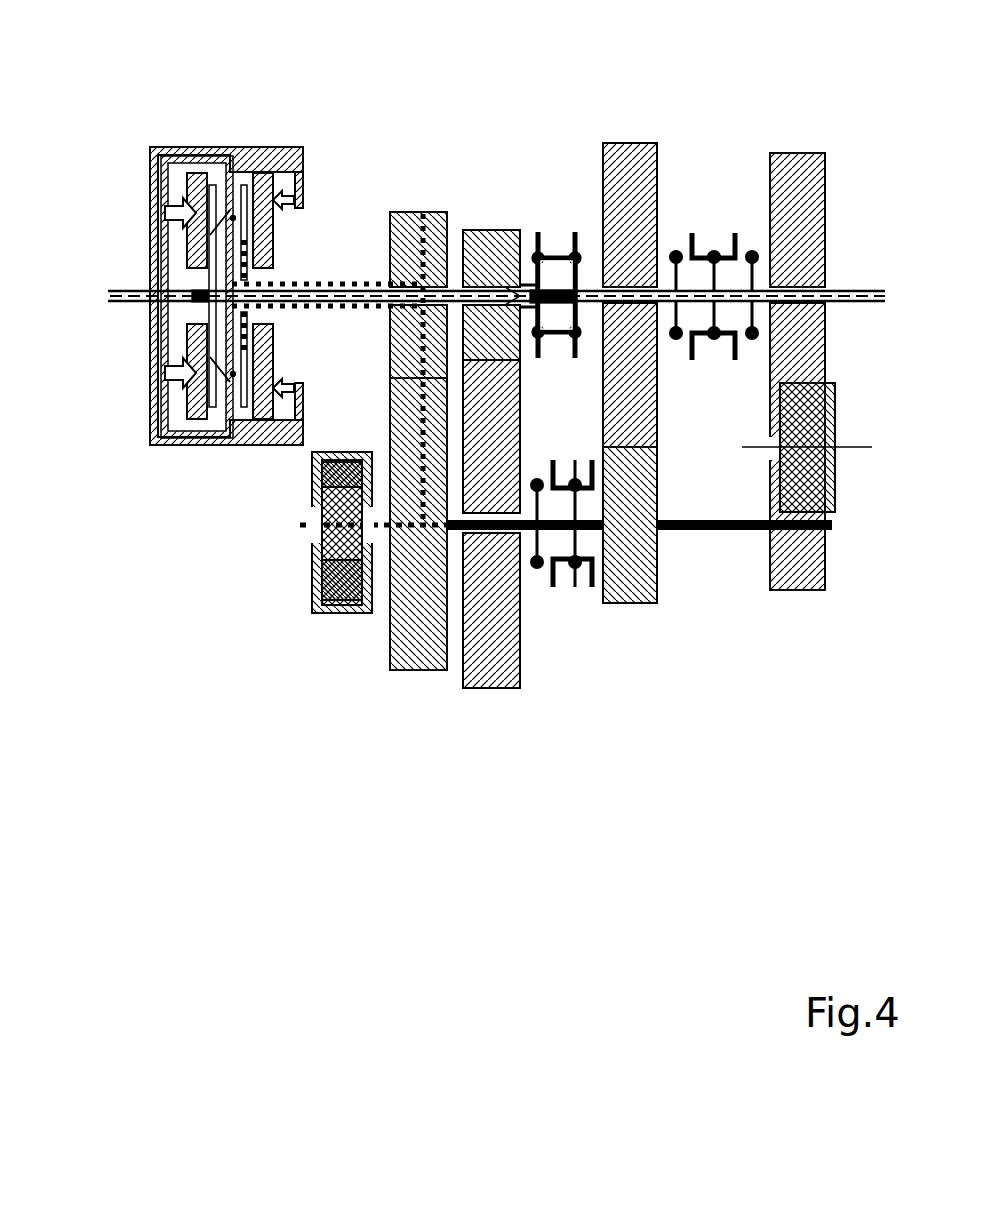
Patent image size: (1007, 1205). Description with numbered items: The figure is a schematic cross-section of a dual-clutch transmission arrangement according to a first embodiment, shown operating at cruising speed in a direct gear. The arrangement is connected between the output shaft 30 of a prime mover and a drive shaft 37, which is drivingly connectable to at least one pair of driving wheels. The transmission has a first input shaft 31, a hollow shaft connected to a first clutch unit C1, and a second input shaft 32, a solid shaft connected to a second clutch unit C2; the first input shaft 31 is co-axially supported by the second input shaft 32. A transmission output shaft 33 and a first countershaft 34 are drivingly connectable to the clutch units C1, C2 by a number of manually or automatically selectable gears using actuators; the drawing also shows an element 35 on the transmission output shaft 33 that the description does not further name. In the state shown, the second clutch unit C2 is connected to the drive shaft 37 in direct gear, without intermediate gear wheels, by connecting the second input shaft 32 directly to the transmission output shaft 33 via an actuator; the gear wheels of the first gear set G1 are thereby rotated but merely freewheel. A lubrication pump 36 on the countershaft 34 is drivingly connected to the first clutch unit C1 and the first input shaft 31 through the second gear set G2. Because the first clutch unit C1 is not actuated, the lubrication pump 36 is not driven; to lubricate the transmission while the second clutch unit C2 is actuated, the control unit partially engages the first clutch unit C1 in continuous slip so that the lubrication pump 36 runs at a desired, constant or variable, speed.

The output shaft of the prime mover 30 is at (115, 304).
The first input shaft 31 is at (320, 283).
The second input shaft 32 is at (190, 295).
The transmission output shaft 33 is at (595, 290).
The first countershaft 34 is at (725, 532).
The synchronizer 35 is at (557, 252).
The lubrication pump 36 is at (335, 612).
The drive shaft 37 is at (852, 290).
The first clutch unit C1 is at (270, 118).
The second clutch unit C2 is at (210, 118).
The first gear set G1 is at (482, 712).
The second gear set G2 is at (414, 712).